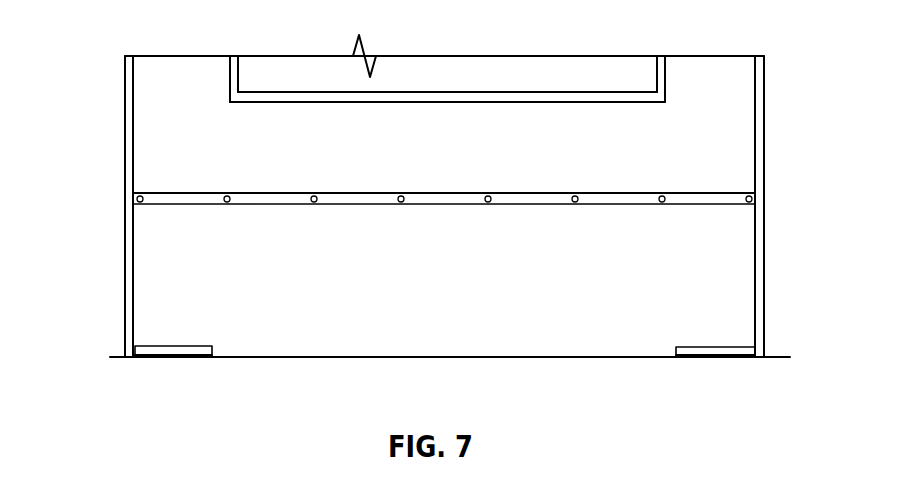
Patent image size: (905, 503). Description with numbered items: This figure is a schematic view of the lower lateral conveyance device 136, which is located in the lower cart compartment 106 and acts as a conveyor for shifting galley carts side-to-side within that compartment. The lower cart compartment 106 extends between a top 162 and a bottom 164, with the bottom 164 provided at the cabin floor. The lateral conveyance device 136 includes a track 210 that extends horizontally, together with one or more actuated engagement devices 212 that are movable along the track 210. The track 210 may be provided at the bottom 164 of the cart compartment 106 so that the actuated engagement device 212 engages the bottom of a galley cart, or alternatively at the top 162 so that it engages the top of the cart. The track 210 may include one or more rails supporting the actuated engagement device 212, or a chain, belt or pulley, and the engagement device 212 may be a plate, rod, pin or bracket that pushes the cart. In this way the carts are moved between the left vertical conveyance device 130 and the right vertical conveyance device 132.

The lower cart compartment 106 is at (767, 248).
The left vertical conveyance device 130 is at (162, 358).
The right vertical conveyance device 132 is at (723, 360).
The lower lateral conveyance device 136 is at (160, 215).
The top 162 is at (538, 98).
The bottom 164 is at (404, 357).
The track 210 is at (172, 192).
The actuated engagement device 212 is at (227, 205).